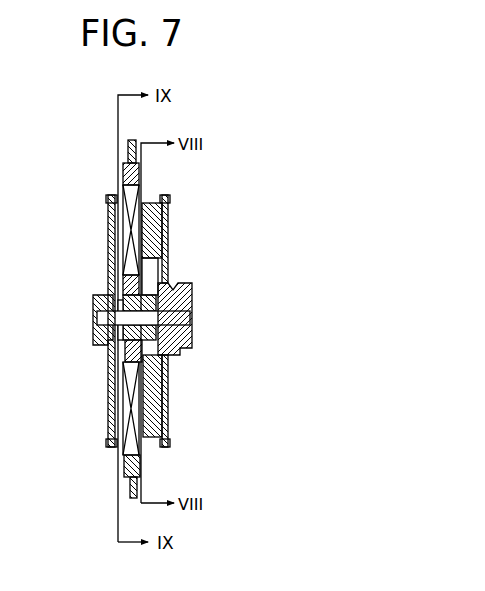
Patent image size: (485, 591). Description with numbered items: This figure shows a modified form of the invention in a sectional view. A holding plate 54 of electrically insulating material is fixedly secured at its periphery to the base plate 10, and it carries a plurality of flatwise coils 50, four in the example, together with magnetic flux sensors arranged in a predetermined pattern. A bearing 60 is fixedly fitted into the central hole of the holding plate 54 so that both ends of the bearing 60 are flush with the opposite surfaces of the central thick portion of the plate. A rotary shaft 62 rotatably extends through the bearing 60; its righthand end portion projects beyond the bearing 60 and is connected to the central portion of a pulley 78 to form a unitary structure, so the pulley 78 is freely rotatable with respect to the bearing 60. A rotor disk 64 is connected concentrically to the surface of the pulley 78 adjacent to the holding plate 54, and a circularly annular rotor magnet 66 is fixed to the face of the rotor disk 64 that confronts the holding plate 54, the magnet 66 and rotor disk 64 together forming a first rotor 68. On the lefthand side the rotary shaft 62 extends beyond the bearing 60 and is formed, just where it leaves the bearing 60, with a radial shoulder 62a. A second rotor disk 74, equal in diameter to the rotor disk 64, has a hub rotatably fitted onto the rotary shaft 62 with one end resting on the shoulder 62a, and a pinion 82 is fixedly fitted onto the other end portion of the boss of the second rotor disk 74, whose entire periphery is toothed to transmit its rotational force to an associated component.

The base plate 10 is at (132, 148).
The holding plate 54 is at (128, 180).
The flatwise coils 50 is at (125, 214).
The radial shoulder 62a is at (123, 297).
The pinion 82 is at (97, 347).
The rotary shaft 62 is at (193, 318).
The pulley 78 is at (193, 340).
The second rotor disk 74 is at (108, 422).
The rotor disk 64 is at (167, 207).
The rotor magnet 66 is at (157, 230).
The bearing 60 is at (146, 296).
The first rotor 68 is at (168, 363).